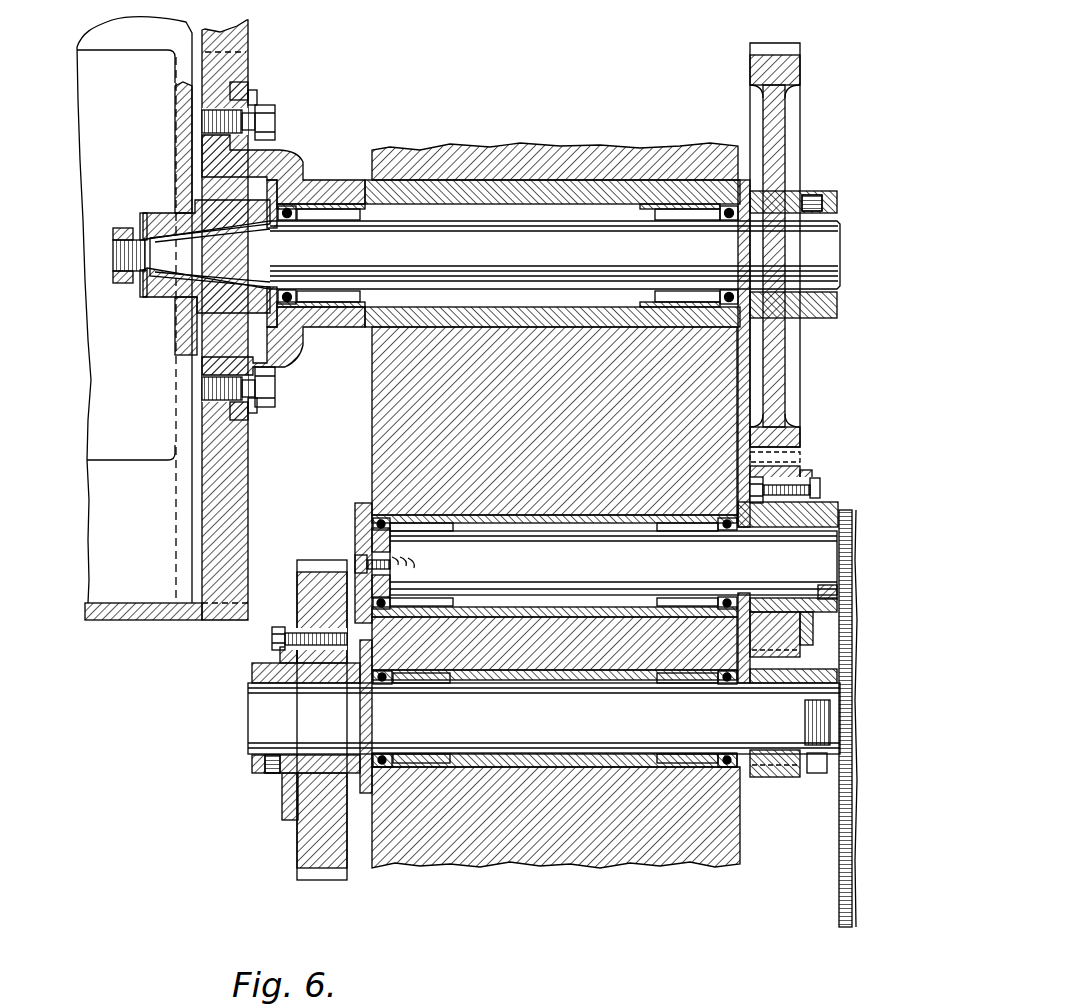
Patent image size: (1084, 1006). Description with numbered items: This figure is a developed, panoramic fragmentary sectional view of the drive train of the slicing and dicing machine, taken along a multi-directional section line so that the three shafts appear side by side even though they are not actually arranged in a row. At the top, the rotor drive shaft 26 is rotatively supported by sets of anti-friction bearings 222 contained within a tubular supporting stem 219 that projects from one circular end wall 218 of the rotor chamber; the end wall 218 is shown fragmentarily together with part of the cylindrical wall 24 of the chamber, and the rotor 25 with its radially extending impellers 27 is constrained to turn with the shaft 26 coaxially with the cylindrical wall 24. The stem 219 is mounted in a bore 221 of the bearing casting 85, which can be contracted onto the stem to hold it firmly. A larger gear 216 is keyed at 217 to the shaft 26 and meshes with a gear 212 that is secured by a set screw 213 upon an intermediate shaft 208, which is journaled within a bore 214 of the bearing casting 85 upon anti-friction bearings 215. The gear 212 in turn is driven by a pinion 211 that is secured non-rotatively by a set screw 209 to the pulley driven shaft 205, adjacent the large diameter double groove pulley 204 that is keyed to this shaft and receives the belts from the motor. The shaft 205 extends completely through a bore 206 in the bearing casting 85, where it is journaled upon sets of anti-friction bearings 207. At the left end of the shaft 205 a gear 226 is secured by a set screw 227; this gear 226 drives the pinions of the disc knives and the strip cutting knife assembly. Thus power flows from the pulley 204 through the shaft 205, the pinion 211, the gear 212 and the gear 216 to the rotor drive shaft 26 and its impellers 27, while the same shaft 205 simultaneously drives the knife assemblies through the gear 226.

The impellers 27 is at (125, 38).
The cylindrical wall 24 is at (128, 621).
The end wall 218 is at (249, 507).
The rotor 25 is at (187, 443).
The tubular supporting stem 219 is at (343, 179).
The rotor drive shaft 26 is at (529, 226).
The bore 221 is at (468, 328).
The anti-friction bearings 222 is at (700, 297).
The gear 216 is at (800, 443).
The key 217 is at (822, 215).
The gear 212 is at (787, 477).
The shaft 208 is at (596, 592).
The bore 214 is at (533, 610).
The anti-friction bearings 215 is at (436, 528).
The set screw 213 is at (823, 593).
The double groove pulley 204 is at (839, 918).
The shaft 205 is at (548, 716).
The bore 206 is at (514, 770).
The anti-friction bearings 207 is at (436, 752).
The pinion 211 is at (773, 775).
The set screw 209 is at (822, 774).
The bearing casting 85 is at (527, 862).
The gear 226 is at (300, 862).
The set screw 227 is at (268, 774).